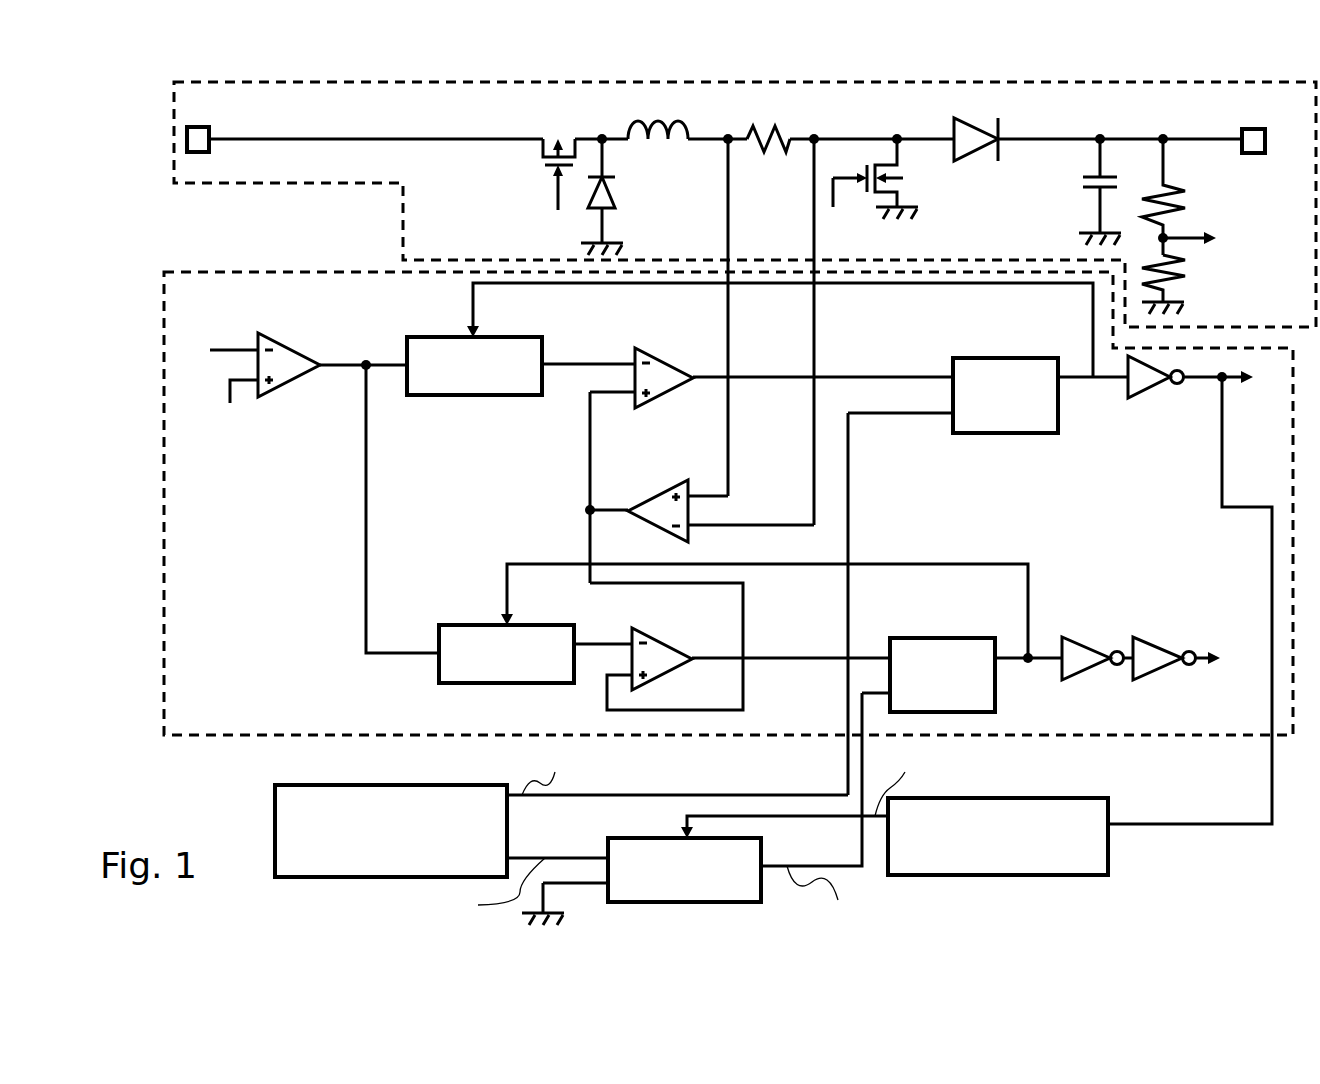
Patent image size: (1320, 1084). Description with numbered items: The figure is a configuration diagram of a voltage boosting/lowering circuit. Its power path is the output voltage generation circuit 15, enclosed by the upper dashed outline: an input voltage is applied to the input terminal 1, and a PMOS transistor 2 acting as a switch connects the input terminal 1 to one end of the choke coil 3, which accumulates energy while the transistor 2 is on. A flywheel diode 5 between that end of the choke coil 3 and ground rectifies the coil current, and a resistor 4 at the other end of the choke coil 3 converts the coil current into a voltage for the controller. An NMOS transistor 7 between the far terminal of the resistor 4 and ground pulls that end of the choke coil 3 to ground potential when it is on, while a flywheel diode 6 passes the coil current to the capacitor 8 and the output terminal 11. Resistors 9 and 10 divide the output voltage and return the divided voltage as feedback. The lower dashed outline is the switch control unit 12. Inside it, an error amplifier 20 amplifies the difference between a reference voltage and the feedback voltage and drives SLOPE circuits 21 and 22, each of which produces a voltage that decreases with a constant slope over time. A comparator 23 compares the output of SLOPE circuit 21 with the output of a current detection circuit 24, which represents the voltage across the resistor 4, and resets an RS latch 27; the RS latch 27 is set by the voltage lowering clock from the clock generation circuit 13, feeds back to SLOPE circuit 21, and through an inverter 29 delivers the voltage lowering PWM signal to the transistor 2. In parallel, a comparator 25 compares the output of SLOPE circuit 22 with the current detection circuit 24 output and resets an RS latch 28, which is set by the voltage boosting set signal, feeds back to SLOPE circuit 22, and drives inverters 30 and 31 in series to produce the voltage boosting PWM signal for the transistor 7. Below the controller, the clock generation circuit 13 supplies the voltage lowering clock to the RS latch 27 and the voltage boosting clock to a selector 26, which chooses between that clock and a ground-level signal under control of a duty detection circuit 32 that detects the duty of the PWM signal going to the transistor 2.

The input terminal 1 is at (206, 126).
The transistor 2 is at (542, 155).
The choke coil 3 is at (680, 120).
The resistor 4 is at (778, 130).
The flywheel diode 5 is at (615, 187).
The flywheel diode 6 is at (968, 117).
The transistor 7 is at (900, 187).
The capacitor 8 is at (1087, 176).
The resistor 9 is at (1185, 207).
The resistor 10 is at (1186, 281).
The output terminal 11 is at (1255, 125).
The switch control unit 12 is at (252, 268).
The clock generation circuit 13 is at (275, 852).
The output voltage generation circuit 15 is at (403, 228).
The error amplifier 20 is at (283, 333).
The SLOPE circuit 21 is at (488, 335).
The SLOPE circuit 22 is at (520, 623).
The comparator 23 is at (642, 348).
The current detection circuit 24 is at (674, 481).
The comparator 25 is at (653, 635).
The selector 26 is at (608, 850).
The RS latch 27 is at (990, 357).
The RS latch 28 is at (922, 636).
The inverter 29 is at (1145, 393).
The inverter 30 is at (1080, 637).
The inverter 31 is at (1153, 637).
The duty detection circuit 32 is at (1108, 812).